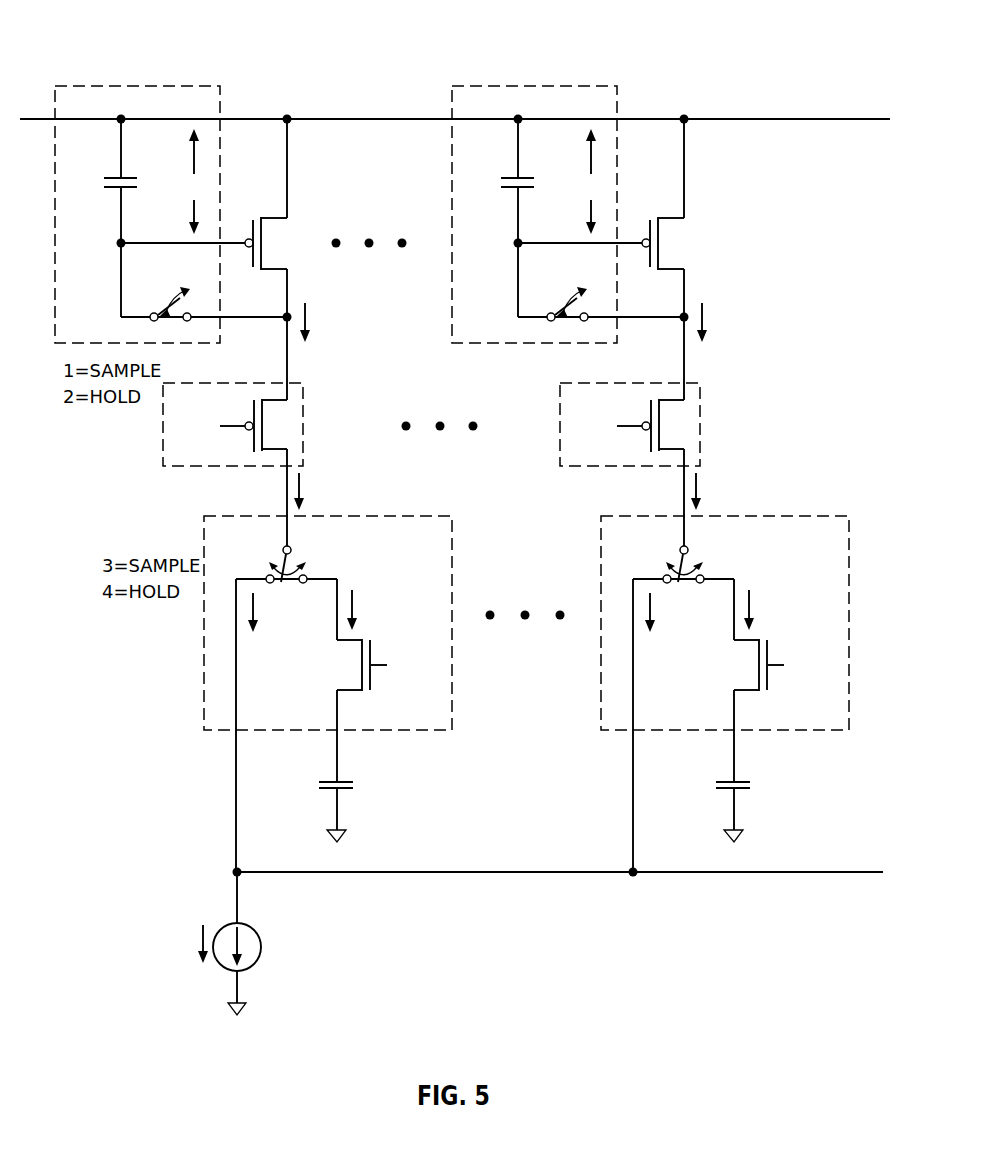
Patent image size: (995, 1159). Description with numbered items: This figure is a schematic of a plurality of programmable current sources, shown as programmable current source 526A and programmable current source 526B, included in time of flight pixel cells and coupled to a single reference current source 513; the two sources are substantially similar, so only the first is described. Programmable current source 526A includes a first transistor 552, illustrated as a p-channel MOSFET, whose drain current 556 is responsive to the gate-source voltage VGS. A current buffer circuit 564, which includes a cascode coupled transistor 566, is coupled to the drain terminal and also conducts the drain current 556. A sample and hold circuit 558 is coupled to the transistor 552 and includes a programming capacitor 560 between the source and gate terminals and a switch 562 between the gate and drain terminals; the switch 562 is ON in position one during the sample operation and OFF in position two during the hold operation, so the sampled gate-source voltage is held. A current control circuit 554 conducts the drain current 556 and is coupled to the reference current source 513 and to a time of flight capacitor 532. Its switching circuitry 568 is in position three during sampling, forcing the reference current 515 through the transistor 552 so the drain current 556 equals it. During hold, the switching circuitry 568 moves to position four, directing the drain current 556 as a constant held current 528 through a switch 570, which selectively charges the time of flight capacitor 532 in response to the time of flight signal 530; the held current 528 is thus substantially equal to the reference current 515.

The programmable current source 526A is at (92, 52).
The programmable current source 526B is at (516, 52).
The sample and hold circuit 558 is at (220, 105).
The programming capacitor 560 is at (137, 176).
The switch 562 is at (167, 297).
The first transistor 552 is at (288, 240).
The drain current 556 is at (321, 317).
The current buffer circuit 564 is at (303, 383).
The cascode coupled transistor 566 is at (245, 422).
The current control circuit 554 is at (452, 522).
The switching circuitry 568 is at (300, 556).
The held current 528 is at (373, 598).
The switch 570 is at (378, 652).
The time of flight signal 530 is at (407, 677).
The reference current 515 is at (268, 625).
The time of flight capacitor 532 is at (361, 801).
The reference current source 513 is at (258, 959).